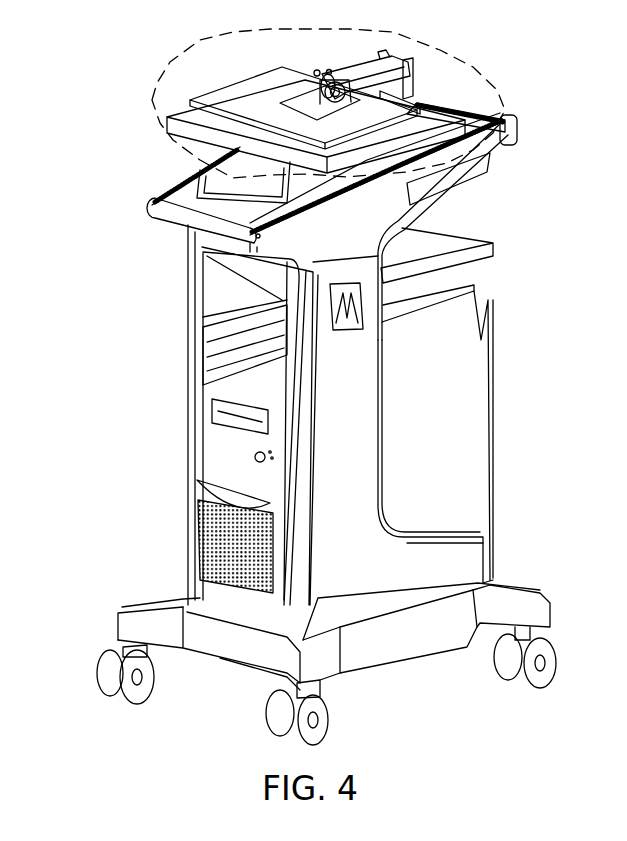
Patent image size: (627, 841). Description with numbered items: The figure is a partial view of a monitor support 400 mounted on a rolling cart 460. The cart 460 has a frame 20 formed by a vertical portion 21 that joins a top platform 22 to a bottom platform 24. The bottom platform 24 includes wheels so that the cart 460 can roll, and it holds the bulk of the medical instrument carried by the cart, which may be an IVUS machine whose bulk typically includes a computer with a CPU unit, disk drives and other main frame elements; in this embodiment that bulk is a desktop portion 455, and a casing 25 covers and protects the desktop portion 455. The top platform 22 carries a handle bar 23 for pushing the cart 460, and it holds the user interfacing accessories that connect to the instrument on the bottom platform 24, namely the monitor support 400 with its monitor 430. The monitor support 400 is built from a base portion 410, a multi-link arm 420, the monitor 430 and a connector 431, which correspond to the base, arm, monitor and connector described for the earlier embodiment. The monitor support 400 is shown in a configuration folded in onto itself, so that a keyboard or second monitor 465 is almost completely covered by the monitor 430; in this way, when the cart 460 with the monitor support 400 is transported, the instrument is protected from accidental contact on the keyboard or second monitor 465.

The frame 20 is at (380, 368).
The vertical portion 21 is at (357, 461).
The top platform 22 is at (386, 216).
The handle bar 23 is at (190, 222).
The bottom platform 24 is at (423, 642).
The casing 25 is at (452, 475).
The monitor support 400 is at (170, 70).
The base portion 410 is at (397, 58).
The multi-link arm 420 is at (365, 60).
The monitor 430 is at (258, 121).
The connector 431 is at (317, 72).
The desktop portion 455 is at (253, 470).
The rolling cart 460 is at (180, 402).
The keyboard or second monitor 465 is at (215, 163).